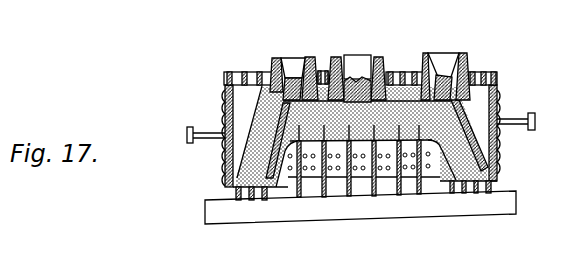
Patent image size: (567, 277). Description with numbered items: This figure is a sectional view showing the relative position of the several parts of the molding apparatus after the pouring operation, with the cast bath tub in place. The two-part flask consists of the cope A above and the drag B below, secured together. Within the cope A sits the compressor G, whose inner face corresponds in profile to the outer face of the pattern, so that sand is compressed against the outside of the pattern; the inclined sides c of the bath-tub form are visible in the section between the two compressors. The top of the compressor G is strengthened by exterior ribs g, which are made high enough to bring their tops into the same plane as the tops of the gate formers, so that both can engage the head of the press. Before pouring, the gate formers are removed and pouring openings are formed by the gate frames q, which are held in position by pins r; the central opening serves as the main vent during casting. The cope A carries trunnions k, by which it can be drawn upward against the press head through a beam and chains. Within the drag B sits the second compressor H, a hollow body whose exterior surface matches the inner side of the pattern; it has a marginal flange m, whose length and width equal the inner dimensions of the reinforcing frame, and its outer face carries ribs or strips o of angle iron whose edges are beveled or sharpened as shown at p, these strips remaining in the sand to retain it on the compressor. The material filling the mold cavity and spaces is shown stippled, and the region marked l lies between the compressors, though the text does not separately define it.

The cope A is at (225, 100).
The drag B is at (235, 191).
The compressor G is at (249, 132).
The second compressor H is at (380, 177).
The inclined sides c is at (377, 139).
The ribs g is at (413, 70).
The trunnions k is at (208, 132).
The filling material l is at (361, 137).
The marginal flange m is at (500, 184).
The ribs or strips o is at (410, 177).
The beveled edges p is at (314, 210).
The gate frames q is at (312, 57).
The pins r is at (302, 82).